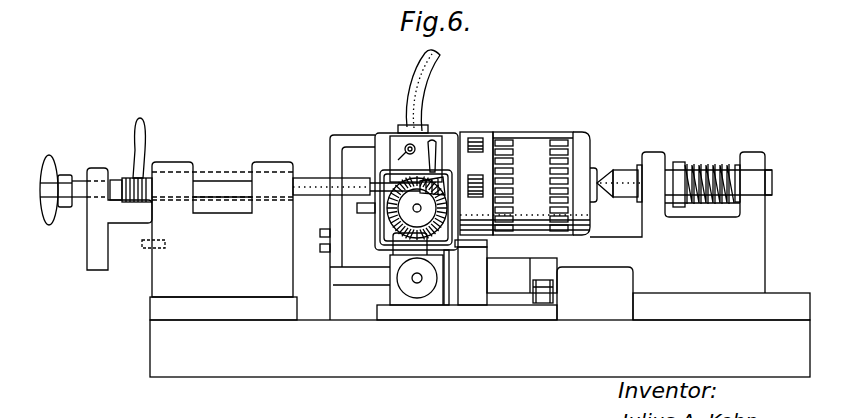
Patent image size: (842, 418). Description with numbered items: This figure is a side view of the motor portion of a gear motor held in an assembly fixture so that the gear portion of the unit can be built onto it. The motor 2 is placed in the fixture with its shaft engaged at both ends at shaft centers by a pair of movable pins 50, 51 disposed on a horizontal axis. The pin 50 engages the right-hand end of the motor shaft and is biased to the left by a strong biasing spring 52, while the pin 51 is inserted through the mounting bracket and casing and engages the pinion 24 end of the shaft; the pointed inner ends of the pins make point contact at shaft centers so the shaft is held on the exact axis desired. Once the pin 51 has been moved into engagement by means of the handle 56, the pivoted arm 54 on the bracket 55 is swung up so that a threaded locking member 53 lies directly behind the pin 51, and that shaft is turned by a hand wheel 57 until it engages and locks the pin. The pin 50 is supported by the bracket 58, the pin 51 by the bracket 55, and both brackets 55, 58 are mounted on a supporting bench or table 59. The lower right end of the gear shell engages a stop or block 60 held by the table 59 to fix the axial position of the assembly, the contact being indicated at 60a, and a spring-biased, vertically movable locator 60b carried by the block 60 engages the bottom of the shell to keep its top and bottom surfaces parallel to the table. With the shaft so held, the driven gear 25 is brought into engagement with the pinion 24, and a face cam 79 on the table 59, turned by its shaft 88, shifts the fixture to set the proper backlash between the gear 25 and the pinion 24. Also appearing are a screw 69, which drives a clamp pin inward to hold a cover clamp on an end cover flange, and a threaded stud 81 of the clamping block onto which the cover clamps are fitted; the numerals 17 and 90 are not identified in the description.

The motor 2 is at (543, 133).
The ventilating slots 17 is at (500, 216).
The pinion 24 is at (437, 187).
The driven gear 25 is at (398, 218).
The pin 50 is at (620, 182).
The pin 51 is at (307, 178).
The biasing spring 52 is at (710, 168).
The threaded locking member 53 is at (110, 185).
The pivoted arm 54 is at (95, 250).
The bracket 55 is at (170, 278).
The handle 56 is at (146, 133).
The hand wheel 57 is at (48, 165).
The bracket 58 is at (760, 230).
The supporting bench or table 59 is at (357, 367).
The stop or block 60 is at (473, 292).
The contact 60a is at (462, 238).
The vertically movable locator 60b is at (448, 250).
The screw 69 is at (438, 148).
The face cam 79 is at (416, 292).
The threaded stud 81 is at (412, 147).
The shaft 88 is at (412, 278).
The cam 90 is at (401, 150).